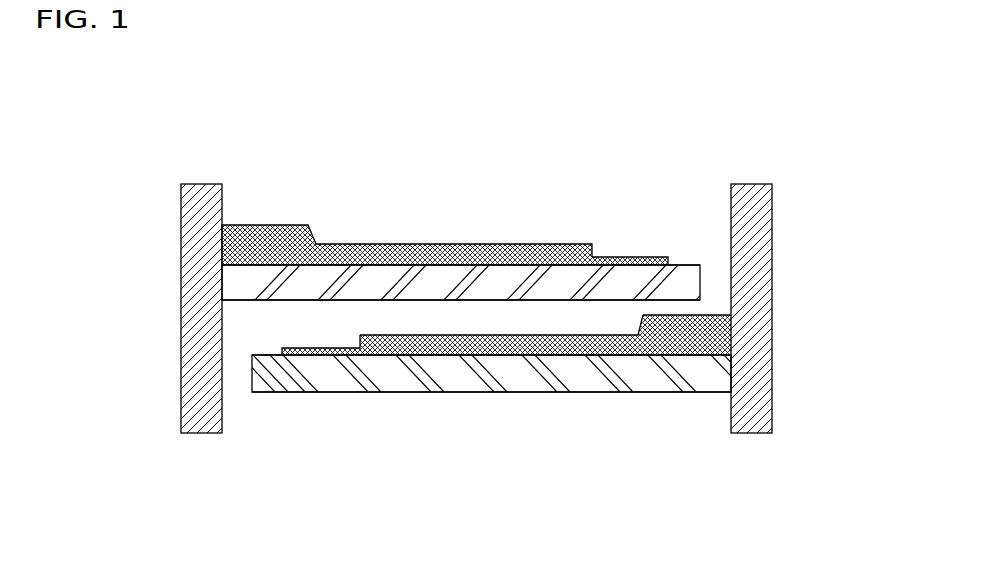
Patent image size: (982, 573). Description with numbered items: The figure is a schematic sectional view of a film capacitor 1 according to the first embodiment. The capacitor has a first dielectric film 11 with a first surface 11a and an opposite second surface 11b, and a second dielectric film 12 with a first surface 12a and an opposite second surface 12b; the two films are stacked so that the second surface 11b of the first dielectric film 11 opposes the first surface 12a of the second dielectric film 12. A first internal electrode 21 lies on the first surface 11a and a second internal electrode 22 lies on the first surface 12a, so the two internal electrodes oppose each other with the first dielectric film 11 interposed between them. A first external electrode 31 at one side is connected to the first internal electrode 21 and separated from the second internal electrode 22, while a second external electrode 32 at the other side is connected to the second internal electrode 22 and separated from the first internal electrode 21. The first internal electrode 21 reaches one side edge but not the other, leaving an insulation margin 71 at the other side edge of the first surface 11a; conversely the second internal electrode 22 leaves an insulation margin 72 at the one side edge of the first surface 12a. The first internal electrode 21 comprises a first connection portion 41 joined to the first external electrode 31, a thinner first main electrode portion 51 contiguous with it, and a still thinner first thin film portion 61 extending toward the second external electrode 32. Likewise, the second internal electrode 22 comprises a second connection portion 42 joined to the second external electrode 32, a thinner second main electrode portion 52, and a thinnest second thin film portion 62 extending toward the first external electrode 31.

The film capacitor 1 is at (790, 146).
The first dielectric film 11 is at (247, 287).
The first surface of the first dielectric film 11a is at (247, 265).
The second surface of the first dielectric film 11b is at (247, 301).
The second dielectric film 12 is at (707, 378).
The first surface of the second dielectric film 12a is at (713, 376).
The second surface of the second dielectric film 12b is at (703, 392).
The first internal electrode 21 is at (617, 131).
The second internal electrode 22 is at (667, 479).
The first external electrode 31 is at (193, 207).
The second external electrode 32 is at (758, 207).
The first connection portion 41 is at (262, 233).
The second connection portion 42 is at (678, 340).
The first main electrode portion 51 is at (430, 240).
The second main electrode portion 52 is at (518, 356).
The first thin film portion 61 is at (636, 258).
The second thin film portion 62 is at (288, 352).
The insulation margin 71 is at (690, 265).
The insulation margin 72 is at (263, 354).